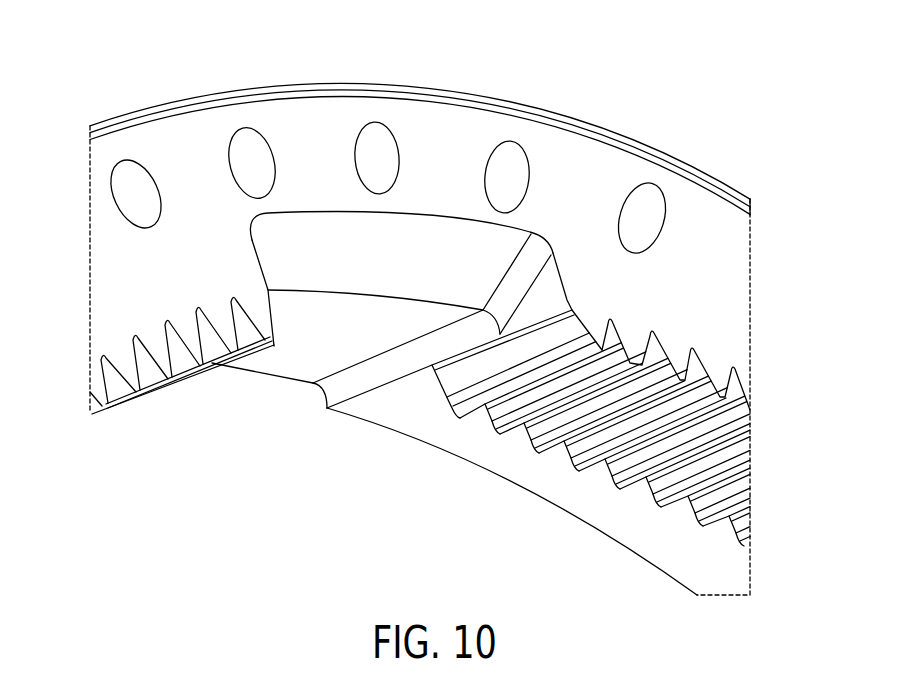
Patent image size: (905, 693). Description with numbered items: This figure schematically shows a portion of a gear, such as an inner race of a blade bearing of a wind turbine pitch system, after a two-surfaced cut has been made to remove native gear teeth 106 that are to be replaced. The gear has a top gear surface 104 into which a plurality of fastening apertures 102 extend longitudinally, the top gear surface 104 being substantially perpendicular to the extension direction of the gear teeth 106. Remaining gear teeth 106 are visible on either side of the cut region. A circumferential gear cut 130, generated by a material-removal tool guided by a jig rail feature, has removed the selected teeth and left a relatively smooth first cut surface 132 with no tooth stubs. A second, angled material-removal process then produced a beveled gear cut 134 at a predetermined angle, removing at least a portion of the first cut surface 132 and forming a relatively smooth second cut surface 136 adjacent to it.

The fastening apertures 102 is at (130, 167).
The top gear surface 104 is at (118, 288).
The gear teeth 106 is at (673, 375).
The circumferential gear cut 130 is at (312, 393).
The first cut surface 132 is at (290, 363).
The beveled gear cut 134 is at (440, 252).
The second cut surface 136 is at (342, 238).